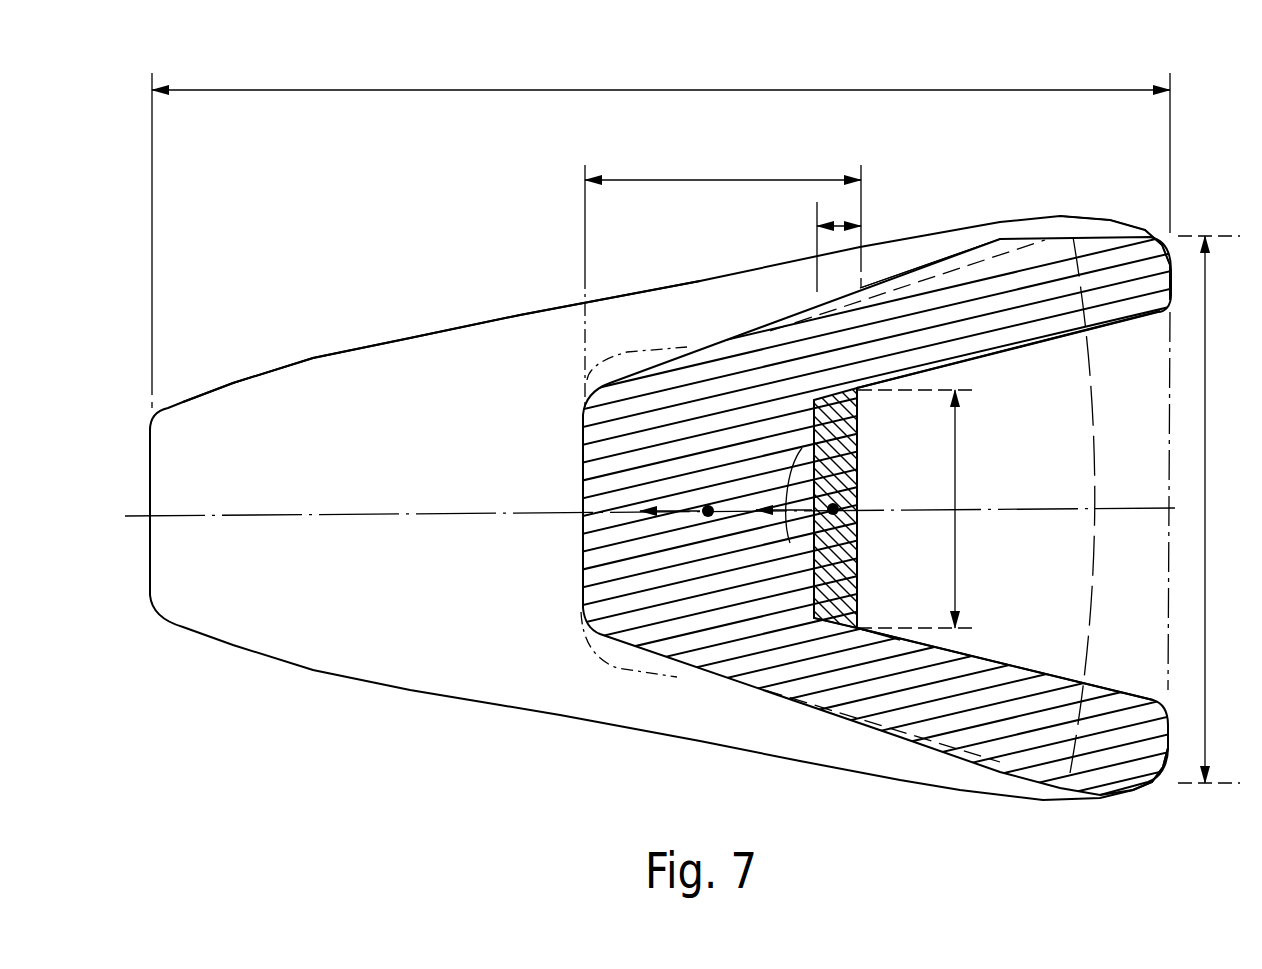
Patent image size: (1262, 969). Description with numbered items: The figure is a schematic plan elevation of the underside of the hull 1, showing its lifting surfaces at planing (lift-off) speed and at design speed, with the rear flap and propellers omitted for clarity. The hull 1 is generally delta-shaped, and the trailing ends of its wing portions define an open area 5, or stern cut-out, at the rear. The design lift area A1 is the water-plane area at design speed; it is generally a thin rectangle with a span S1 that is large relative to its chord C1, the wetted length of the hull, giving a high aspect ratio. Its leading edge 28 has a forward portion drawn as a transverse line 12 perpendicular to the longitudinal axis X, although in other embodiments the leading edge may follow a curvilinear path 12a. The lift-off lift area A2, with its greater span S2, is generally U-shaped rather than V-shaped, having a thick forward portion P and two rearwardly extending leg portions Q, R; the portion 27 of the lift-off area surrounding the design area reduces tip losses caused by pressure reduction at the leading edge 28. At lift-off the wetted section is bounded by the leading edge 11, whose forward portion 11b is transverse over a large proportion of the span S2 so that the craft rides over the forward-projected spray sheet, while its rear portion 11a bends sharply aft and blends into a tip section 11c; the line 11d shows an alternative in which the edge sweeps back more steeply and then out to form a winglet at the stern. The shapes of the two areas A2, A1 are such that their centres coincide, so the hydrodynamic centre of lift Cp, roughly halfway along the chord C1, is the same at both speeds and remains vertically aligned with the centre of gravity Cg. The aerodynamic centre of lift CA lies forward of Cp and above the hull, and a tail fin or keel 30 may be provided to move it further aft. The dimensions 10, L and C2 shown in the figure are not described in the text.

The hull 1 is at (307, 383).
The body 10 is at (452, 330).
The leading edge of the wetted section 11 is at (693, 358).
The rear portion of the leading edge 11a is at (885, 282).
The forward portion of the leading edge 11b is at (582, 467).
The tip section 11c is at (1107, 236).
The line showing alternative leading edge shape 11d is at (957, 281).
The transverse line 12 is at (802, 572).
The curvilinear path 12a is at (790, 543).
The portion of the lift-off lift area 27 is at (852, 650).
The leading edge of the design lift area 28 is at (832, 625).
The tail fin or keel 30 is at (1113, 578).
The open area 5 is at (1032, 655).
The design lift area A1 is at (843, 586).
The lift-off lift area A2 is at (913, 307).
The aerodynamic centre of lift CA is at (708, 512).
The hydrodynamic centre of lift Cp is at (840, 487).
The centre of gravity Cg is at (842, 498).
The forward portion P is at (603, 551).
The leg portion Q is at (1038, 271).
The leg portion R is at (968, 724).
The longitudinal axis X is at (138, 513).
The length L is at (661, 233).
The chord of the design lift area C1 is at (838, 214).
The distance C2 is at (723, 280).
The span at design speed S1 is at (923, 509).
The span at lift-off speed S2 is at (1209, 509).